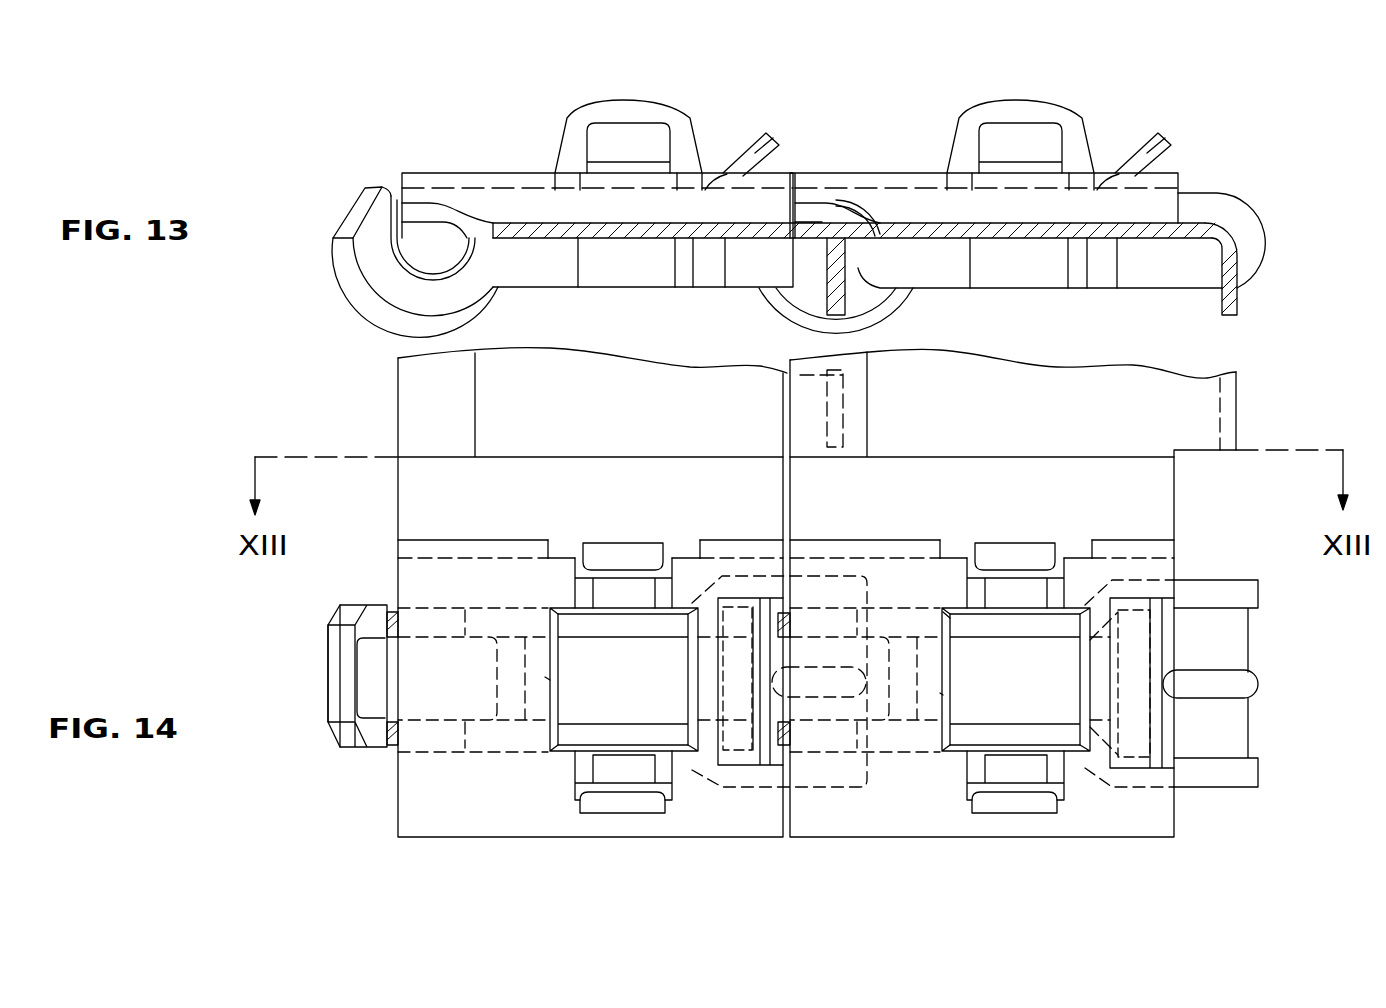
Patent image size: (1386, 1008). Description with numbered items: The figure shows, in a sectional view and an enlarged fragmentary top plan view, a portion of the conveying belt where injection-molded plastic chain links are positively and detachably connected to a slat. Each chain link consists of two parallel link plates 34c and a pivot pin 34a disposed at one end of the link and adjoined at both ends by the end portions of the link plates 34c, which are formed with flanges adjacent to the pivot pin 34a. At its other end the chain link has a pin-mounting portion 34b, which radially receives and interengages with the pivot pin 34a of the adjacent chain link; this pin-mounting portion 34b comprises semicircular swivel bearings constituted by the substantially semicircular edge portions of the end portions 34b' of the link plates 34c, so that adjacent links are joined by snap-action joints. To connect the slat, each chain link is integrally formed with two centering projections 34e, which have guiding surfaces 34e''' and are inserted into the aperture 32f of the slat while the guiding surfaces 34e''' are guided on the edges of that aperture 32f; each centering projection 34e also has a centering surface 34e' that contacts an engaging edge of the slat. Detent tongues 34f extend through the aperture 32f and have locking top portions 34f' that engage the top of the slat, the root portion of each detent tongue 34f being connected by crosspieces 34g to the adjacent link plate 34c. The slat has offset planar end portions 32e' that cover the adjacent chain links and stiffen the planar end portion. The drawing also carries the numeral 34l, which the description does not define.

In FIG. 14, the pivot pin 34a is at (1230, 658).
In FIG. 13, the pin-mounting portion 34b is at (566, 262).
In FIG. 14, the pin-mounting portion 34b is at (279, 714).
In FIG. 13, the end portions of the link plates 34b' is at (580, 282).
In FIG. 14, the end portions of the link plates 34b' is at (321, 740).
In FIG. 13, the link plates 34c is at (538, 281).
In FIG. 14, the link plates 34c is at (497, 742).
In FIG. 14, the centering projections 34e is at (815, 758).
In FIG. 14, the centering surface 34e' is at (907, 553).
In FIG. 14, the guiding surfaces 34e''' is at (819, 679).
In FIG. 13, the detent tongues 34f is at (869, 118).
In FIG. 14, the detent tongues 34f is at (838, 530).
In FIG. 13, the locking top portions 34f' is at (849, 106).
In FIG. 14, the locking top portions 34f' is at (818, 643).
In FIG. 14, the crosspieces 34g is at (663, 592).
In FIG. 14, the nut 34l is at (377, 665).
In FIG. 13, the offset planar end portions 32e' is at (938, 126).
In FIG. 14, the aperture 32f is at (545, 677).